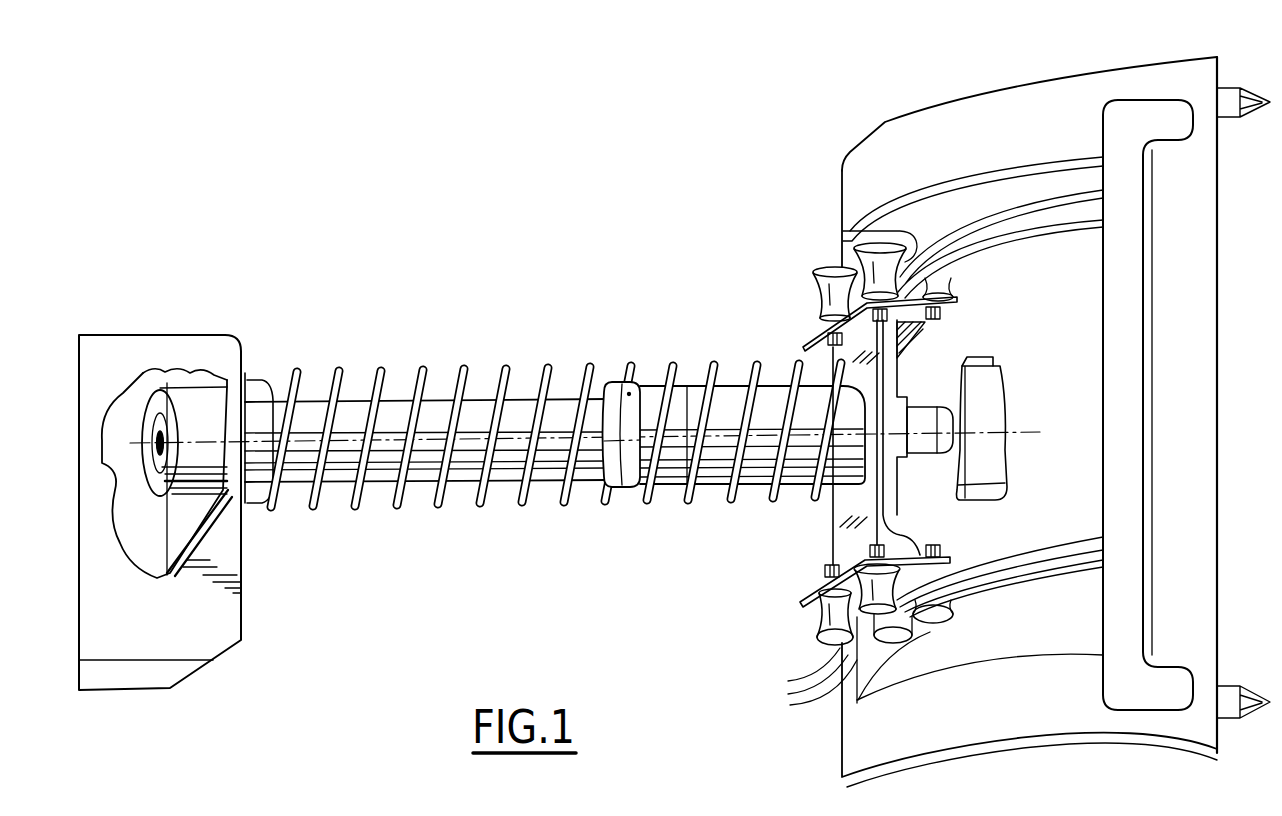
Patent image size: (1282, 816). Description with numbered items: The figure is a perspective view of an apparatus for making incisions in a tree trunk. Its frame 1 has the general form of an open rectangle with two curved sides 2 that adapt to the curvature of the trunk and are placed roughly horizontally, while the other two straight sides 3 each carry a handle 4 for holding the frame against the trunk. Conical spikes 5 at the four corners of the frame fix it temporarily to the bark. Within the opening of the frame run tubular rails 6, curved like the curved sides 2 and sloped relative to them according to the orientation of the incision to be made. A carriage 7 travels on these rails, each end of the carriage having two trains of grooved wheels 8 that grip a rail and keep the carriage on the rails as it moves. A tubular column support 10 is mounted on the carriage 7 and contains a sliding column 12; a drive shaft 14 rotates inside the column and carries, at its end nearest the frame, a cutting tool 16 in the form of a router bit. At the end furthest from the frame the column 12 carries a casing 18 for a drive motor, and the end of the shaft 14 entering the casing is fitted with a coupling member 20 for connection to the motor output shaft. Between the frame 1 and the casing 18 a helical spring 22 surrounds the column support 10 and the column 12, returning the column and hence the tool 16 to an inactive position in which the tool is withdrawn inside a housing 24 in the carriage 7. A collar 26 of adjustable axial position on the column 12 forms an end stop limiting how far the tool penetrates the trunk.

The frame 1 is at (1058, 73).
The curved sides 2 is at (956, 117).
The straight sides 3 is at (1203, 286).
The handle 4 is at (1110, 296).
The conical spikes 5 is at (1250, 108).
The tubular rails 6 is at (1030, 226).
The carriage 7 is at (833, 485).
The grooved wheels 8 is at (832, 282).
The tubular column support 10 is at (808, 475).
The sliding column 12 is at (575, 405).
The drive shaft 14 is at (919, 455).
The cutting tool 16 is at (985, 412).
The casing 18 is at (245, 565).
The coupling member 20 is at (187, 497).
The helical spring 22 is at (358, 508).
The housing 24 is at (895, 380).
The collar 26 is at (621, 488).